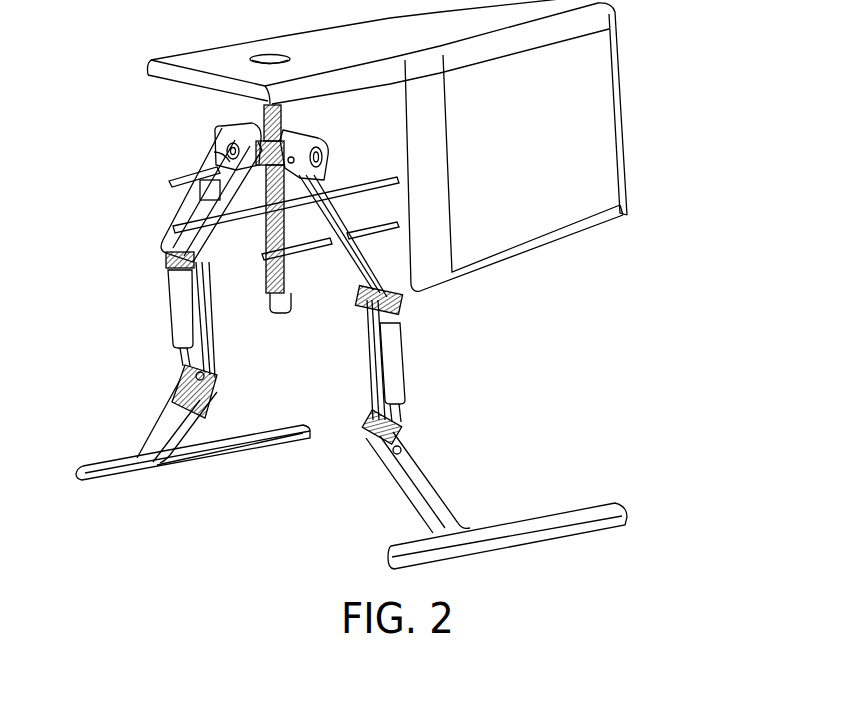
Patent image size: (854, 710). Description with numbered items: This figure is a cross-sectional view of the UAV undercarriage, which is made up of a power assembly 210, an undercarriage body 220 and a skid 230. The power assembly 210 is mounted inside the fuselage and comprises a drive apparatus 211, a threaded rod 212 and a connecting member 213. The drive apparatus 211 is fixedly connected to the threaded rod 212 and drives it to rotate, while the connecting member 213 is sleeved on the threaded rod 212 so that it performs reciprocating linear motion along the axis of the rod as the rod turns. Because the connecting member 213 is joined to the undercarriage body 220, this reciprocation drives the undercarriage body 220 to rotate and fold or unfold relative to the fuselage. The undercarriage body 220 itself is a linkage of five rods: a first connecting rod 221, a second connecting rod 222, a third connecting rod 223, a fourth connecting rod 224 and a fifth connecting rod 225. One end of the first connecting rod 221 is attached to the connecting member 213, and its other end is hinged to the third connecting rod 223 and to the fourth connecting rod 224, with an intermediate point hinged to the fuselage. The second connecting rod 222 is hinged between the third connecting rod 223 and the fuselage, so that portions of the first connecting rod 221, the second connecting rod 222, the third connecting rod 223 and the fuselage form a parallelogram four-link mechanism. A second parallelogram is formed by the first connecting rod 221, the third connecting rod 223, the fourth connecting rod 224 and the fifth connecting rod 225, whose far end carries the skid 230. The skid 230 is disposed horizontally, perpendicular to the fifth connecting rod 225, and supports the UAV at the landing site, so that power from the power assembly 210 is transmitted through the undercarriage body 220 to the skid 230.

The power assembly 210 is at (88, 46).
The drive apparatus 211 is at (158, 58).
The threaded rod 212 is at (258, 110).
The connecting member 213 is at (213, 128).
The undercarriage body 220 is at (700, 190).
The first connecting rod 221 is at (345, 220).
The second connecting rod 222 is at (384, 267).
The third connecting rod 223 is at (383, 380).
The fourth connecting rod 224 is at (387, 347).
The fifth connecting rod 225 is at (417, 453).
The skid 230 is at (517, 523).